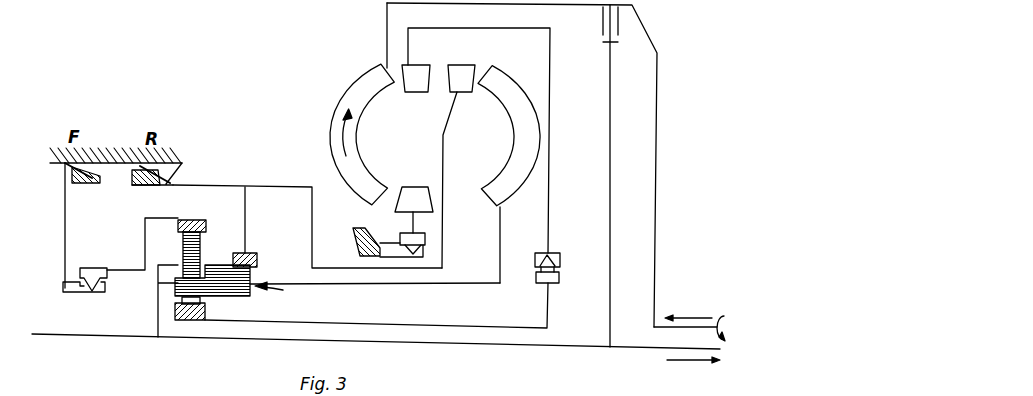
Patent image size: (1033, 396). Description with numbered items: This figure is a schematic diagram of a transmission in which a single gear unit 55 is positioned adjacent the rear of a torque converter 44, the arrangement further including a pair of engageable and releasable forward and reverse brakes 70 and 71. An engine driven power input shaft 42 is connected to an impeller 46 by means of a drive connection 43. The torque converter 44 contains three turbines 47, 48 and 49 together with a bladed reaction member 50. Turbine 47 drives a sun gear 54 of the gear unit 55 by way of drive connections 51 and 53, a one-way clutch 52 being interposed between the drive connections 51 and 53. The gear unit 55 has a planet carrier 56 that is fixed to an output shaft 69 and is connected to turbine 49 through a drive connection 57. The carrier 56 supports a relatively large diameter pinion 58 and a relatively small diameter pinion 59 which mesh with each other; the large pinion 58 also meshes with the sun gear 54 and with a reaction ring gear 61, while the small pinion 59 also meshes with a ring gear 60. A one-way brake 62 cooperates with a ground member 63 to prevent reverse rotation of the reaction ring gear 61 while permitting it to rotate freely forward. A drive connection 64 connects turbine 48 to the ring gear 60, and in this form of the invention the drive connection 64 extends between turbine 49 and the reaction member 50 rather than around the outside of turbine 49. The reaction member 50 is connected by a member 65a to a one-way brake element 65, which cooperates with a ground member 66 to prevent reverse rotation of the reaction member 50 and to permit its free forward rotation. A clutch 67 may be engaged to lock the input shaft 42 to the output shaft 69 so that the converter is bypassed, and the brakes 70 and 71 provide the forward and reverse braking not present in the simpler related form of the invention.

The power input shaft 42 is at (675, 327).
The drive connection 43 is at (657, 163).
The torque converter 44 is at (340, 102).
The impeller 46 is at (352, 128).
The turbine 47 is at (416, 90).
The turbine 48 is at (462, 93).
The turbine 49 is at (516, 148).
The reaction member 50 is at (413, 190).
The drive connection 51 is at (550, 80).
The one-way clutch 52 is at (556, 278).
The drive connection 53 is at (383, 326).
The sun gear 54 is at (188, 322).
The gear unit 55 is at (375, 292).
The planet carrier 56 is at (158, 305).
The drive connection 57 is at (500, 237).
The pinion 58 is at (200, 247).
The pinion 59 is at (240, 292).
The ring gear 60 is at (257, 260).
The ring gear 61 is at (192, 221).
The one-way brake 62 is at (93, 269).
The ground member 63 is at (78, 291).
The drive connection 64 is at (445, 176).
The one-way brake element 65 is at (428, 242).
The member 65a is at (410, 225).
The ground member 66 is at (383, 258).
The clutch 67 is at (600, 22).
The output shaft 69 is at (530, 348).
The brake 70 is at (63, 206).
The brake 71 is at (174, 183).